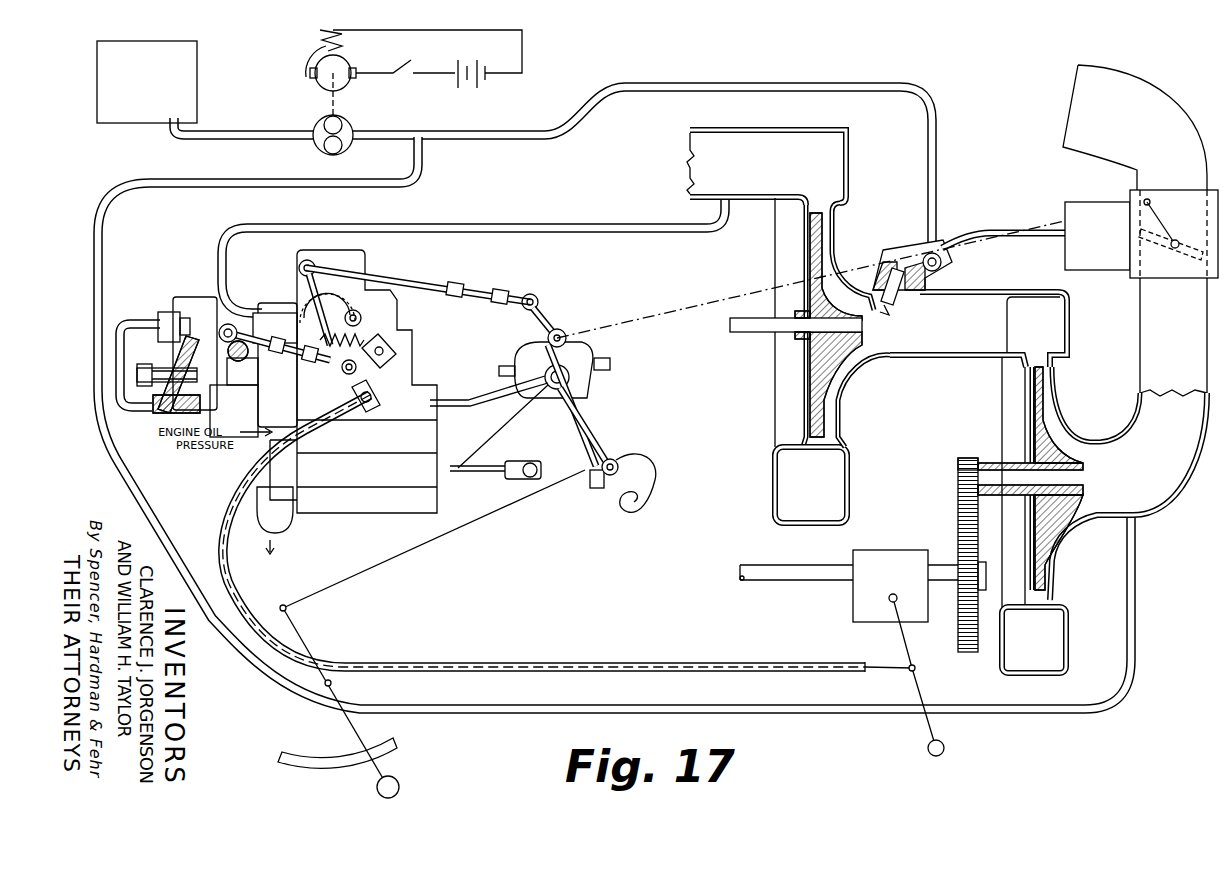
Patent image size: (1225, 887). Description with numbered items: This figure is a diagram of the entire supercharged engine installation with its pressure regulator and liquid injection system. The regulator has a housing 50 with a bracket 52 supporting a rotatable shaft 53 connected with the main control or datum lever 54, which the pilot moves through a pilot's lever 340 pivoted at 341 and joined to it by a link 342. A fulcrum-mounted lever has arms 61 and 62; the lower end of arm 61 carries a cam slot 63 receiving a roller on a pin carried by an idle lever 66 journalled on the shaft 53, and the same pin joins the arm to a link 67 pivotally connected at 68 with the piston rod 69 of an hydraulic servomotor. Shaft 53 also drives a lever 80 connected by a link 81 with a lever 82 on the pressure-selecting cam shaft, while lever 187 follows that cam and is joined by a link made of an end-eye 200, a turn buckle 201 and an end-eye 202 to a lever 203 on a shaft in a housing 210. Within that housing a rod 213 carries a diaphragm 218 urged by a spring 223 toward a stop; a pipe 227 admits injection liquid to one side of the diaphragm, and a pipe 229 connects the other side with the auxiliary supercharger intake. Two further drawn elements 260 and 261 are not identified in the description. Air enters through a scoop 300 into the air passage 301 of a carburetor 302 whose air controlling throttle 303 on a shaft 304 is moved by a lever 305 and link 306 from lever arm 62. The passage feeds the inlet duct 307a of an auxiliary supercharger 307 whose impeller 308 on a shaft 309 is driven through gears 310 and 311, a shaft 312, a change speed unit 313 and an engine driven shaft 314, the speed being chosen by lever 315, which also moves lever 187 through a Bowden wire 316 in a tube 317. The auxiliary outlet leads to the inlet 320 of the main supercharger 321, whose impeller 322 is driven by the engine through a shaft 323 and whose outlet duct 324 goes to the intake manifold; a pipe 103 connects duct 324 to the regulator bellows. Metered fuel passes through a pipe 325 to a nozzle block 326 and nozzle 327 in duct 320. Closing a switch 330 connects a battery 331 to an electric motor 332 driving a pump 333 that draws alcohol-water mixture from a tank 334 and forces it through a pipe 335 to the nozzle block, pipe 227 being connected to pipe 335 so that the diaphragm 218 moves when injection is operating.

The housing 50 is at (372, 503).
The bracket 52 is at (470, 388).
The rotatable shaft 53 is at (544, 384).
The main control or datum lever 54 is at (568, 434).
The lever arm 61 is at (620, 456).
The lever arm 62 is at (566, 333).
The cam slot 63 is at (645, 463).
The idle lever 66 is at (590, 424).
The link 67 is at (580, 480).
The pivot connection 68 is at (528, 465).
The piston rod 69 is at (491, 466).
The lever 80 is at (541, 313).
The link 81 is at (410, 283).
The lever 82 is at (298, 272).
The pipe 103 is at (727, 218).
The lever 187 is at (356, 398).
The end-eye 200 is at (378, 341).
The turn buckle 201 is at (324, 382).
The end-eye 202 is at (274, 337).
The lever 203 is at (243, 387).
The housing 210 is at (245, 312).
The rod 213 is at (190, 371).
The diaphragm 218 is at (193, 390).
The spring 223 is at (192, 338).
The pipe 227 is at (422, 166).
The pipe 229 is at (1136, 634).
The spring 260 is at (328, 335).
The pivot 261 is at (362, 318).
The scoop 300 is at (1078, 66).
The air passage 301 is at (1128, 244).
The carburetor 302 is at (1129, 195).
The air controlling throttle 303 is at (1190, 238).
The shaft 304 is at (1172, 256).
The lever 305 is at (1160, 214).
The link 306 is at (747, 291).
The auxiliary supercharger 307 is at (1068, 610).
The inlet duct 307a is at (1150, 507).
The impeller 308 is at (1032, 410).
The shaft 309 is at (990, 460).
The gear 310 is at (957, 465).
The gear 311 is at (958, 530).
The shaft 312 is at (945, 580).
The change speed unit 313 is at (856, 606).
The engine driven shaft 314 is at (779, 572).
The lever 315 is at (924, 690).
The Bowden wire 316 is at (887, 670).
The tube 317 is at (560, 661).
The inlet 320 is at (925, 360).
The main supercharger 321 is at (771, 487).
The impeller 322 is at (815, 343).
The shaft 323 is at (735, 328).
The duct 324 is at (713, 127).
The pipe 325 is at (988, 232).
The nozzle block 326 is at (896, 250).
The nozzle 327 is at (896, 308).
The switch 330 is at (386, 69).
The battery 331 is at (478, 67).
The electric motor 332 is at (316, 79).
The pump 333 is at (353, 127).
The tank 334 is at (198, 58).
The pipe 335 is at (716, 86).
The pilot's lever 340 is at (366, 742).
The pivot 341 is at (333, 684).
The link 342 is at (374, 569).